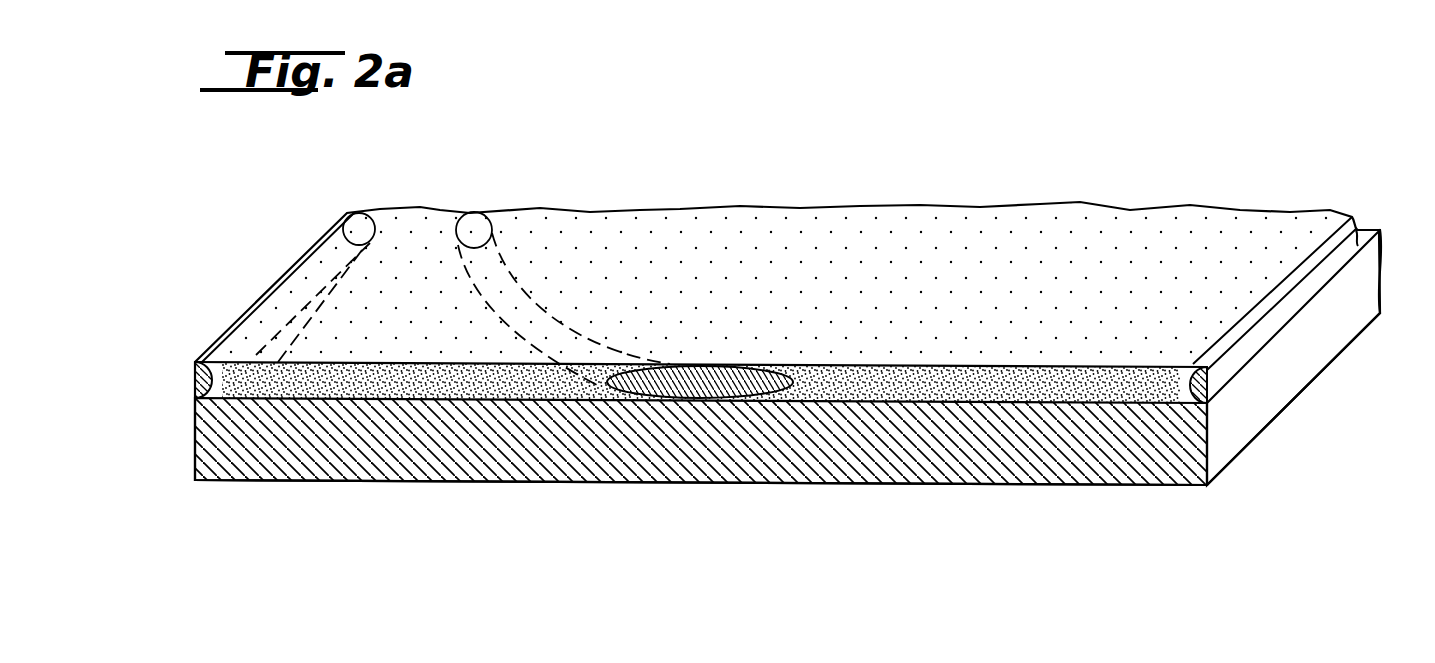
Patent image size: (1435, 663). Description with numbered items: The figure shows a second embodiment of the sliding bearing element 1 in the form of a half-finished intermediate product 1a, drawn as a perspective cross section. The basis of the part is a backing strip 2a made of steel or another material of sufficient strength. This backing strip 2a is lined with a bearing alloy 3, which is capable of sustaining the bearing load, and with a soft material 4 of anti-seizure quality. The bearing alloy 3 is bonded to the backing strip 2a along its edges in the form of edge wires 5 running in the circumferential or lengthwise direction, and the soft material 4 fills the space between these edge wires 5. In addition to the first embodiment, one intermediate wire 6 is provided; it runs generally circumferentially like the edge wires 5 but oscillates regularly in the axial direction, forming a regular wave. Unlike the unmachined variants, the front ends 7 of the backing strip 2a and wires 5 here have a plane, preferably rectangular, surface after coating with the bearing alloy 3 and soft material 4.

The sliding bearing element 1 is at (1276, 133).
The intermediate product 1a is at (1037, 192).
The backing strip 2a is at (563, 457).
The bearing alloy 3 is at (224, 320).
The soft material 4 is at (670, 238).
The wires 5 is at (195, 378).
The intermediate wire 6 is at (697, 382).
The front ends 7 is at (195, 433).